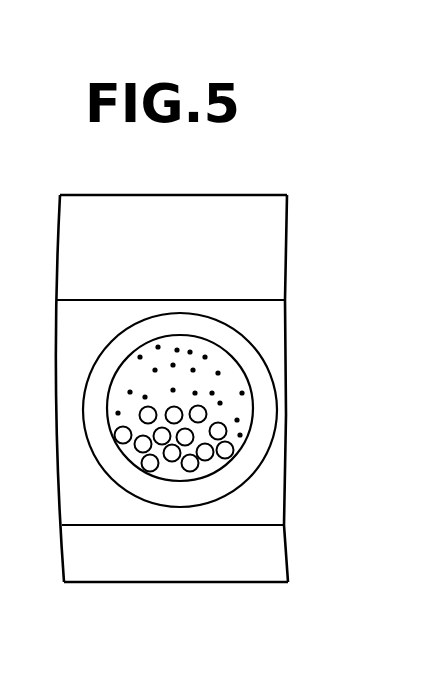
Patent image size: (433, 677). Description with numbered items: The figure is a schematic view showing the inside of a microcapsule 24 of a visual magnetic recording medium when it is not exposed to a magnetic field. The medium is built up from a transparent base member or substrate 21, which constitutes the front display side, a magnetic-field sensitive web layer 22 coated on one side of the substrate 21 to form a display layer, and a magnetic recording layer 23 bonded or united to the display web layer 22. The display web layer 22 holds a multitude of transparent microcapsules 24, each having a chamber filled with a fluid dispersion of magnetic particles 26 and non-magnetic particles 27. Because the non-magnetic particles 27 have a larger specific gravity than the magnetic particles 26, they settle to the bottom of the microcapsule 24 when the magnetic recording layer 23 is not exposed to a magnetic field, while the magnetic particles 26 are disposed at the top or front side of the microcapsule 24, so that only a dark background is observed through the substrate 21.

The transparent base member or substrate 21 is at (283, 268).
The magnetic-field sensitive web layer 22 is at (286, 357).
The magnetic recording layer 23 is at (280, 556).
The microcapsule 24 is at (230, 337).
The magnetic particles 26 is at (230, 383).
The non-magnetic particles 27 is at (225, 450).